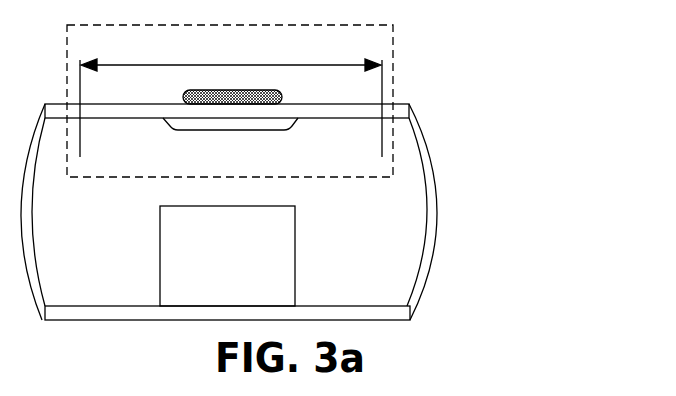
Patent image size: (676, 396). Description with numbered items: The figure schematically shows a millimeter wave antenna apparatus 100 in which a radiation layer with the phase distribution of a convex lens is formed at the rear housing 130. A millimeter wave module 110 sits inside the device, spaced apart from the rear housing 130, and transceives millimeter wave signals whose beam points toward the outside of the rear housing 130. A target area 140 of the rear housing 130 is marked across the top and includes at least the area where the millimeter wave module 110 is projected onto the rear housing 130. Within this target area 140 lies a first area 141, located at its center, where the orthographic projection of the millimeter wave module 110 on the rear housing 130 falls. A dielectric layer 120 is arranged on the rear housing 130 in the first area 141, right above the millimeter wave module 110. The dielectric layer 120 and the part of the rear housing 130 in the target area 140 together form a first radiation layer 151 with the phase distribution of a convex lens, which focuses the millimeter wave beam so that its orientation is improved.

The millimeter wave antenna apparatus 100 is at (284, 172).
The millimeter wave module 110 is at (295, 253).
The dielectric layer 120 is at (233, 92).
The rear housing 130 is at (402, 109).
The target area 140 is at (230, 101).
The first area 141 is at (231, 130).
The first radiation layer 151 is at (393, 168).